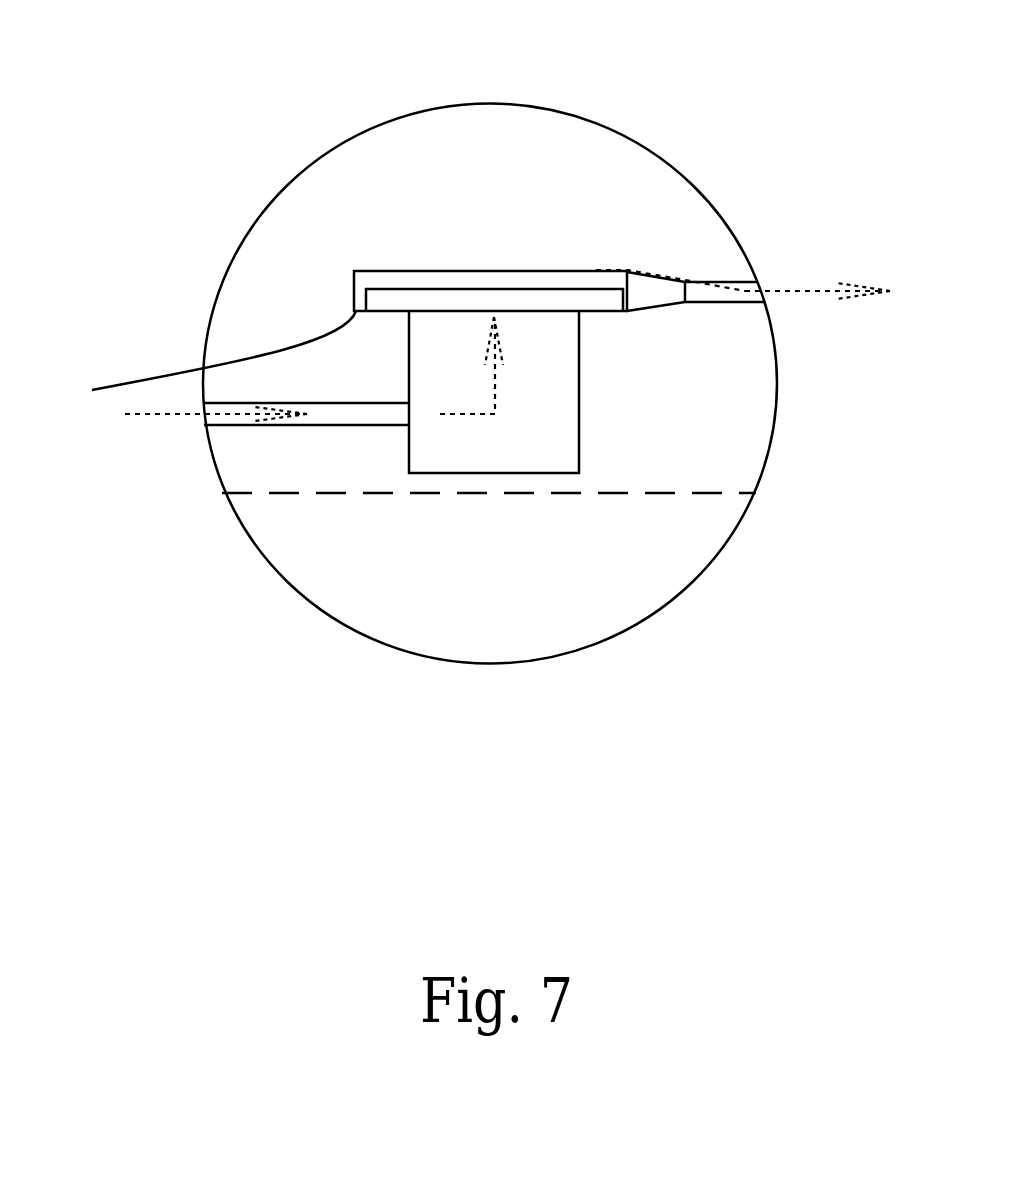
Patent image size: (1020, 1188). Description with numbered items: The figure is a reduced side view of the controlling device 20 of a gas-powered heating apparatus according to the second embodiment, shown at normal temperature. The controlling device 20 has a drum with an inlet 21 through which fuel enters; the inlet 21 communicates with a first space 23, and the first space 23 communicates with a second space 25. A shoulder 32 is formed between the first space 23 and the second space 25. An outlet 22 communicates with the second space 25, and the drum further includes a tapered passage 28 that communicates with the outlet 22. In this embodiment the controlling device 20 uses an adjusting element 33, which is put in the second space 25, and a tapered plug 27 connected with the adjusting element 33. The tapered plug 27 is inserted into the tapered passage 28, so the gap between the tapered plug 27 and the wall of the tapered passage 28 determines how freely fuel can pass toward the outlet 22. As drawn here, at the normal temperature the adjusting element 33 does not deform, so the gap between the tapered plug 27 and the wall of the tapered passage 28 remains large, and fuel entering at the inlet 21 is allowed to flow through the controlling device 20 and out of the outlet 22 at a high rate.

The controlling device 20 is at (447, 644).
The inlet 21 is at (347, 413).
The outlet 22 is at (742, 287).
The first space 23 is at (549, 337).
The second space 25 is at (363, 277).
The tapered plug 27 is at (652, 291).
The tapered passage 28 is at (660, 273).
The shoulder 32 is at (201, 365).
The adjusting element 33 is at (453, 303).